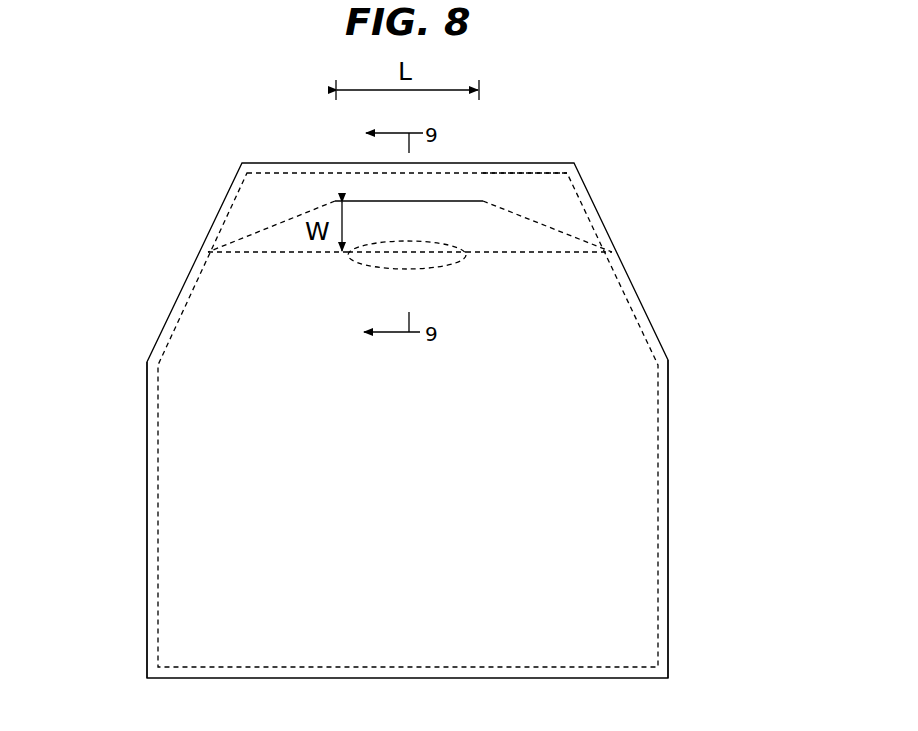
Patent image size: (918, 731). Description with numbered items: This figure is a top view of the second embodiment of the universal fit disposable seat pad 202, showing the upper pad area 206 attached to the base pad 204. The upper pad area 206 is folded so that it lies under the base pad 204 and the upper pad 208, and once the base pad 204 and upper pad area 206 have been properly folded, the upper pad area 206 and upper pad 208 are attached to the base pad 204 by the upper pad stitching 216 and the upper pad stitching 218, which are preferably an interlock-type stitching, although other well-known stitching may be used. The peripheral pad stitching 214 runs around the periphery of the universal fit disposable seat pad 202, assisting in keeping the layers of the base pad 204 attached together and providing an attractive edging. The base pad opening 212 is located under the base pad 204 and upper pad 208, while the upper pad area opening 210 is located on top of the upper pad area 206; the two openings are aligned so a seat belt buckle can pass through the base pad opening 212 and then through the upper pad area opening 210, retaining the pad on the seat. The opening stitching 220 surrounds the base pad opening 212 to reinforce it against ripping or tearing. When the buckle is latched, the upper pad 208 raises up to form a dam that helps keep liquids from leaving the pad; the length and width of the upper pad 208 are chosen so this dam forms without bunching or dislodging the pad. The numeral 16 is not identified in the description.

The universal fit disposable seat pad 202 is at (132, 346).
The base pad 204 is at (434, 516).
The upper pad area 206 is at (527, 198).
The upper pad 208 is at (540, 235).
The upper pad area opening 210 is at (365, 201).
The base pad opening 212 is at (418, 257).
The peripheral pad stitching 214 is at (158, 598).
The upper pad stitching 216 is at (527, 252).
The upper pad stitching 218 is at (273, 222).
The opening stitching 220 is at (450, 242).
The fold line left portion 16 is at (255, 252).